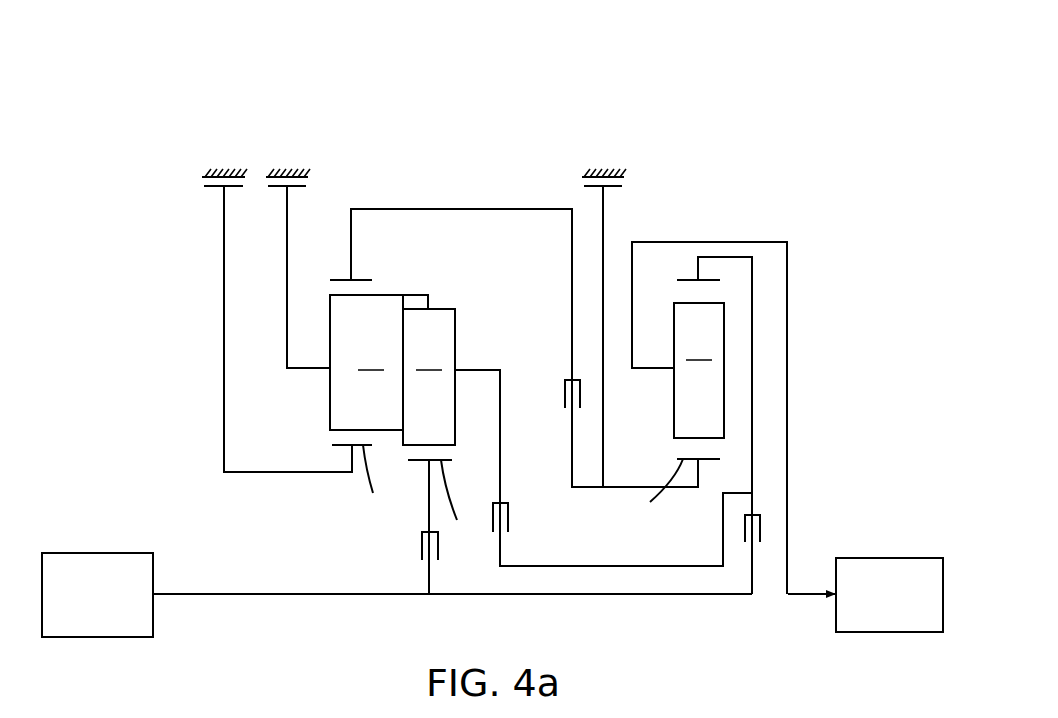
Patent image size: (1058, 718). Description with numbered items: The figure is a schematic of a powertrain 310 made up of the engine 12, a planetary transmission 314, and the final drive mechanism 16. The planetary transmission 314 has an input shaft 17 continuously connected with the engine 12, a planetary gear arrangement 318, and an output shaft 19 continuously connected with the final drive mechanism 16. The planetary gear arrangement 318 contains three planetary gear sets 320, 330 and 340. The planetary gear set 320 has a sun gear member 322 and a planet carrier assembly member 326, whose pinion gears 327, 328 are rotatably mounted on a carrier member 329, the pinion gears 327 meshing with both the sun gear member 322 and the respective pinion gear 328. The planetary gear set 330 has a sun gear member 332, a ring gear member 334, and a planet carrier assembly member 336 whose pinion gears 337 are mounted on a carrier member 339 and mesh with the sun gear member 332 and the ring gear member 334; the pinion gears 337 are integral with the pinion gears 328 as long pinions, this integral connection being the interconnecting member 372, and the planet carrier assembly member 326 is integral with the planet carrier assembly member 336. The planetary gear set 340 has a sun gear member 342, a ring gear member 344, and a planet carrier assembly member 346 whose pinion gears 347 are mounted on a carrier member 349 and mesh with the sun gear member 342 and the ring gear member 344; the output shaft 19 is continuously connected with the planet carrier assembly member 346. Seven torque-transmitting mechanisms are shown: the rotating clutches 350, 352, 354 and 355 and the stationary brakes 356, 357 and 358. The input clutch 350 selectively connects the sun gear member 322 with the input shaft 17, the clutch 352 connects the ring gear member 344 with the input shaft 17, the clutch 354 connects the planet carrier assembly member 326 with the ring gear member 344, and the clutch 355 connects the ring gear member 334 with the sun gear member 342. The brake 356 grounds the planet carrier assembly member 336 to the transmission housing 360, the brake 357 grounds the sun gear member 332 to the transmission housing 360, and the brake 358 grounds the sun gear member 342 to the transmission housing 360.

The engine 12 is at (115, 535).
The final drive mechanism 16 is at (873, 543).
The input shaft 17 is at (192, 596).
The output shaft 19 is at (808, 596).
The powertrain 310 is at (148, 312).
The planetary transmission 314 is at (380, 105).
The planetary gear arrangement 318 is at (555, 105).
The planetary gear set 320 is at (417, 466).
The sun gear member 322 is at (459, 505).
The planet carrier assembly member 326 is at (460, 366).
The pinion gears 327 is at (429, 377).
The pinion gears 328 is at (432, 299).
The carrier member 329 is at (500, 362).
The planetary gear set 330 is at (345, 455).
The sun gear member 332 is at (371, 484).
The ring gear member 334 is at (343, 279).
The planet carrier assembly member 336 is at (322, 375).
The pinion gears 337 is at (366, 362).
The carrier member 339 is at (303, 371).
The planetary gear set 340 is at (692, 478).
The sun gear member 342 is at (654, 493).
The ring gear member 344 is at (690, 279).
The planet carrier assembly member 346 is at (665, 378).
The pinion gears 347 is at (699, 370).
The carrier member 349 is at (660, 370).
The input clutch 350 is at (415, 567).
The clutch 352 is at (765, 500).
The clutch 354 is at (516, 548).
The clutch 355 is at (558, 410).
The brake 356 is at (312, 178).
The brake 357 is at (203, 178).
The brake 358 is at (626, 178).
The transmission housing 360 is at (208, 172).
The interconnecting member 372 is at (412, 296).